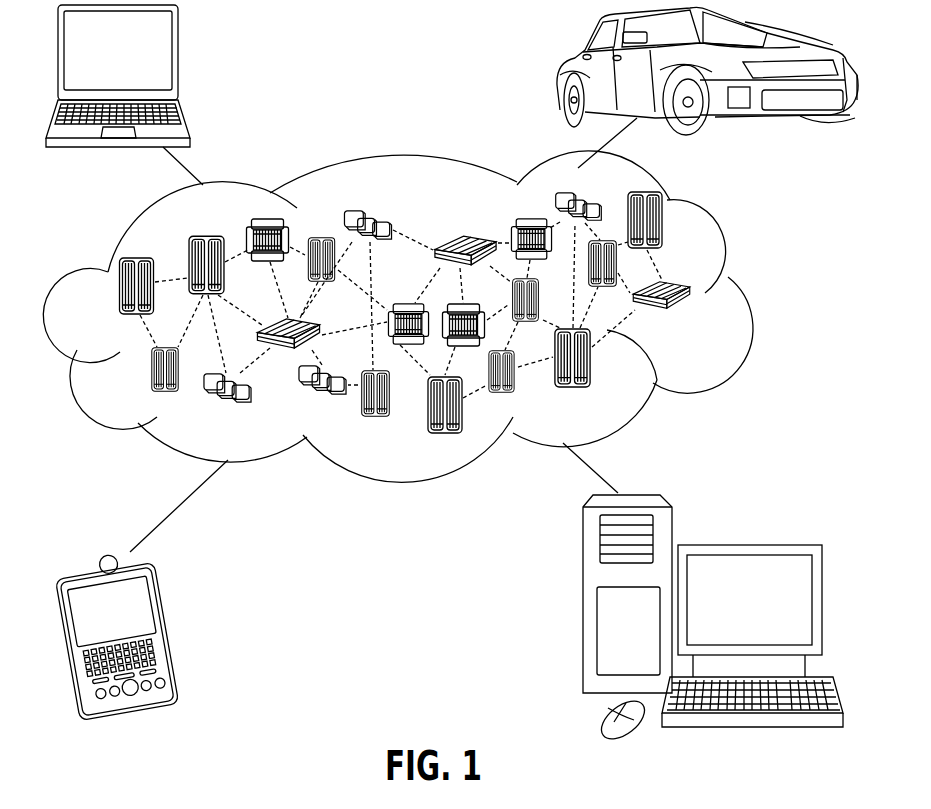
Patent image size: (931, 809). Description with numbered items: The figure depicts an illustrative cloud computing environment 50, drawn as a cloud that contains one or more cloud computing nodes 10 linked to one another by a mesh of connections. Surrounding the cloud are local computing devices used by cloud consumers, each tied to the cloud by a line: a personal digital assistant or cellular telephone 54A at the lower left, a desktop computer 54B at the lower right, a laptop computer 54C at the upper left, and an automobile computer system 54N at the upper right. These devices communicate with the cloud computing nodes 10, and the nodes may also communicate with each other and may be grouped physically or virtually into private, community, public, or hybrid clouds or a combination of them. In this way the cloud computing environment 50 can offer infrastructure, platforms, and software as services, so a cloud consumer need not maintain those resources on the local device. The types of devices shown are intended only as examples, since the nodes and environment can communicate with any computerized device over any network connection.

The cloud computing nodes 10 is at (697, 322).
The cloud computing environment 50 is at (747, 295).
The personal digital assistant (PDA) or cellular telephone 54A is at (172, 626).
The desktop computer 54B is at (747, 543).
The laptop computer 54C is at (180, 60).
The automobile computer system 54N is at (557, 75).